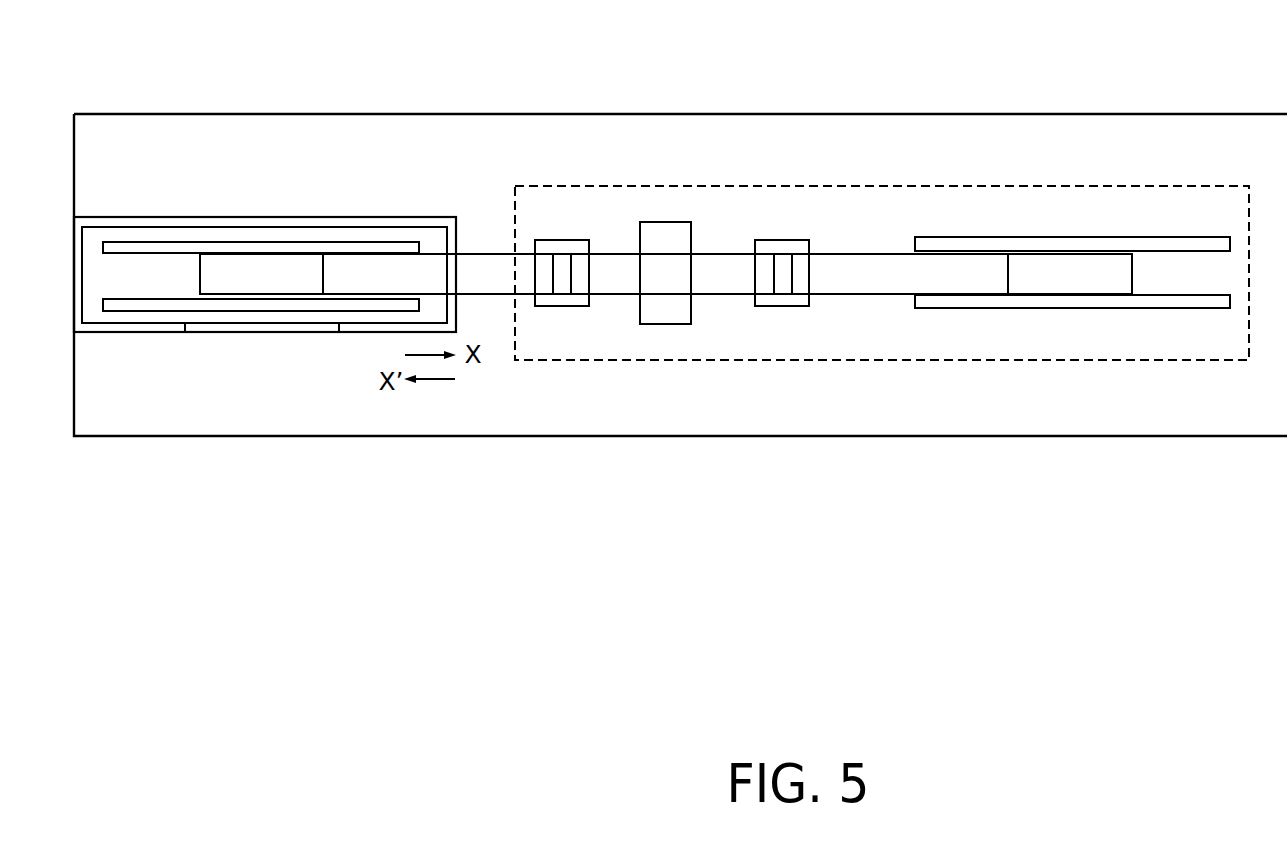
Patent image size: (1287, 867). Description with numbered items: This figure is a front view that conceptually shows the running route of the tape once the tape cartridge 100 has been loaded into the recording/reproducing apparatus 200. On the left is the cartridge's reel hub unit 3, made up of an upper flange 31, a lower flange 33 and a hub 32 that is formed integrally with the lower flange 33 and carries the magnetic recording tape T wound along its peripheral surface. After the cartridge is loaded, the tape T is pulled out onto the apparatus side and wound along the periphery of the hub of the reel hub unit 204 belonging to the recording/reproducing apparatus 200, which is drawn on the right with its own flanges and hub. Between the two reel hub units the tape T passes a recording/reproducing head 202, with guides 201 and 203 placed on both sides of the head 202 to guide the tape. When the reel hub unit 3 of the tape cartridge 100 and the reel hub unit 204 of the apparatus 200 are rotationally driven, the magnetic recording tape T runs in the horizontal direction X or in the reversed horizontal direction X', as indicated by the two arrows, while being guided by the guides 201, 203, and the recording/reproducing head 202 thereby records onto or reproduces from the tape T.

The reel hub unit 3 is at (265, 280).
The upper flange 31 is at (128, 247).
The hub 32 is at (248, 285).
The lower flange 33 is at (125, 306).
The tape cartridge 100 is at (273, 202).
The recording/reproducing apparatus 200 is at (869, 106).
The guide 201 is at (563, 240).
The recording/reproducing head 202 is at (665, 222).
The guide 203 is at (781, 240).
The reel hub unit 204 is at (1109, 222).
The magnetic recording tape T is at (859, 304).